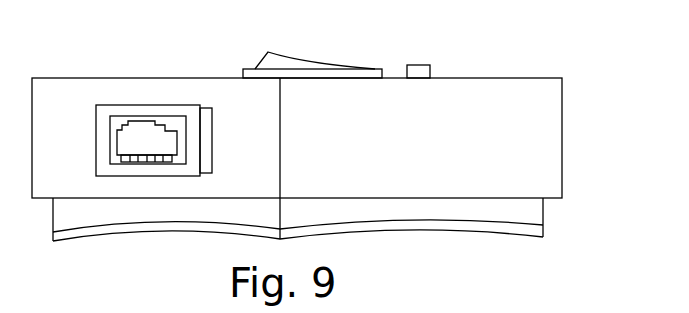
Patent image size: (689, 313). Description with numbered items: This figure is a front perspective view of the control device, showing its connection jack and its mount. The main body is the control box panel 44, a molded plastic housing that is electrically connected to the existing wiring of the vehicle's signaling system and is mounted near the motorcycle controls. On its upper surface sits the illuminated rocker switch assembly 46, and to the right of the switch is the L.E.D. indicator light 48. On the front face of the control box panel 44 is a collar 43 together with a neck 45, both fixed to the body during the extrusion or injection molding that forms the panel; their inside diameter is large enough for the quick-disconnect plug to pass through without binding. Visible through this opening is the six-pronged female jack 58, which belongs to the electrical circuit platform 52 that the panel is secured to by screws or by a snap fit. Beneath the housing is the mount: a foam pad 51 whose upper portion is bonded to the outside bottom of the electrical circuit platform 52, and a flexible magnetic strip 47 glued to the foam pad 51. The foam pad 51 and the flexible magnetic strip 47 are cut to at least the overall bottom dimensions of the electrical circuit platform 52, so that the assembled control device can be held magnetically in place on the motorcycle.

The collar 43 is at (105, 138).
The control box panel 44 is at (545, 133).
The neck 45 is at (205, 138).
The illuminated rocker switch assembly 46 is at (275, 63).
The flexible magnetic strip 47 is at (145, 228).
The L.E.D. indicator light 48 is at (420, 70).
The foam pad 51 is at (88, 213).
The electrical circuit platform 52 is at (460, 302).
The six-pronged female jack 58 is at (143, 135).